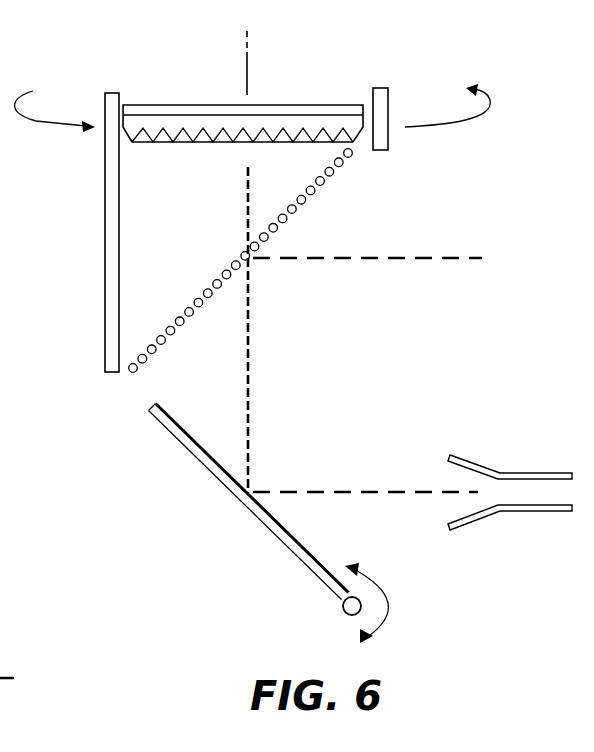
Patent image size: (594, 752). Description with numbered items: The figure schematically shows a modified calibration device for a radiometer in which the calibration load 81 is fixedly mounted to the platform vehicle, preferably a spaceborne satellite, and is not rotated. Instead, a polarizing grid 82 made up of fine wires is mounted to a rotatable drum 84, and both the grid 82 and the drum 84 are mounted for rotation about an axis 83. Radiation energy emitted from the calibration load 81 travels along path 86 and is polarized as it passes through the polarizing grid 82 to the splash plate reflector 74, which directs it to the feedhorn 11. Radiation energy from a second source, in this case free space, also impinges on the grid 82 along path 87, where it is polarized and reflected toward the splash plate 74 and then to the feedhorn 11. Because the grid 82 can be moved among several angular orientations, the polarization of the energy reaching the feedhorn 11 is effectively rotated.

The feedhorn 11 is at (467, 522).
The splash plate reflector 74 is at (278, 533).
The calibration load 81 is at (313, 108).
The polarizing grid 82 is at (311, 190).
The axis 83 is at (248, 79).
The rotatable drum 84 is at (110, 207).
The path 86 is at (246, 180).
The path 87 is at (437, 259).